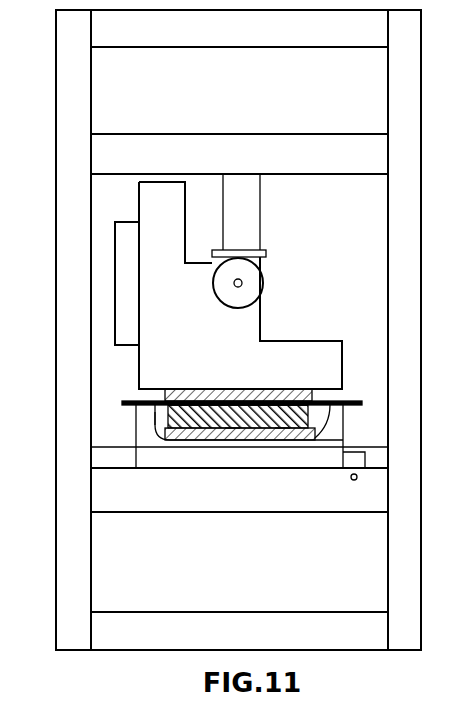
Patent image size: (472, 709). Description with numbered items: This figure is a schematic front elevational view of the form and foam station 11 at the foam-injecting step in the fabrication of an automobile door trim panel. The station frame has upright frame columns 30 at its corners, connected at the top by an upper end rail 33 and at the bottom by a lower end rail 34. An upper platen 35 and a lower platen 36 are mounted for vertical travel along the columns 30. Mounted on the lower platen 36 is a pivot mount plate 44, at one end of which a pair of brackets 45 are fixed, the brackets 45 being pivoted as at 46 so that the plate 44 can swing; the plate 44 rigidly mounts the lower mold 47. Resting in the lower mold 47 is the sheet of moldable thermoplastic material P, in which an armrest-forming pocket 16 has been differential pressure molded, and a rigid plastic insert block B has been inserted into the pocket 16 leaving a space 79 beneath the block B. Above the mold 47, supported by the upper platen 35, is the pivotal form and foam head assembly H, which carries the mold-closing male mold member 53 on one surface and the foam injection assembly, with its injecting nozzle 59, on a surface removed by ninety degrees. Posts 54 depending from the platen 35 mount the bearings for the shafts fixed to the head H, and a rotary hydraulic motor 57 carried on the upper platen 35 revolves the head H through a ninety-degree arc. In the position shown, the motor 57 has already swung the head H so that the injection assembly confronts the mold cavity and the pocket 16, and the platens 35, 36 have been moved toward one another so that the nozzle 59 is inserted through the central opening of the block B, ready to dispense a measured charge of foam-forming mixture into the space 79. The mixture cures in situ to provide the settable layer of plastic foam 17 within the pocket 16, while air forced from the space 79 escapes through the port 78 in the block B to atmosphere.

The form and foam station 11 is at (430, 82).
The upright frame columns 30 is at (58, 220).
The upper end rail 33 is at (296, 37).
The lower end rail 34 is at (231, 638).
The upper platen 35 is at (231, 164).
The lower platen 36 is at (198, 499).
The posts 54 is at (248, 212).
The rotary hydraulic motor 57 is at (255, 287).
The form and foam head assembly H is at (193, 349).
The male mold member 53 is at (127, 333).
The sheet of moldable thermoplastic material P is at (350, 401).
The port 78 is at (282, 401).
The injecting nozzle 59 is at (240, 405).
The rigid plastic insert block B is at (200, 392).
The lower mold 47 is at (333, 439).
The pivot mount plate 44 is at (147, 457).
The brackets 45 is at (365, 458).
The pivot 46 is at (351, 481).
The space beneath block 79 is at (192, 425).
The armrest-forming pocket 16 is at (232, 440).
The layer of semi-rigid plastic foam 17 is at (282, 440).